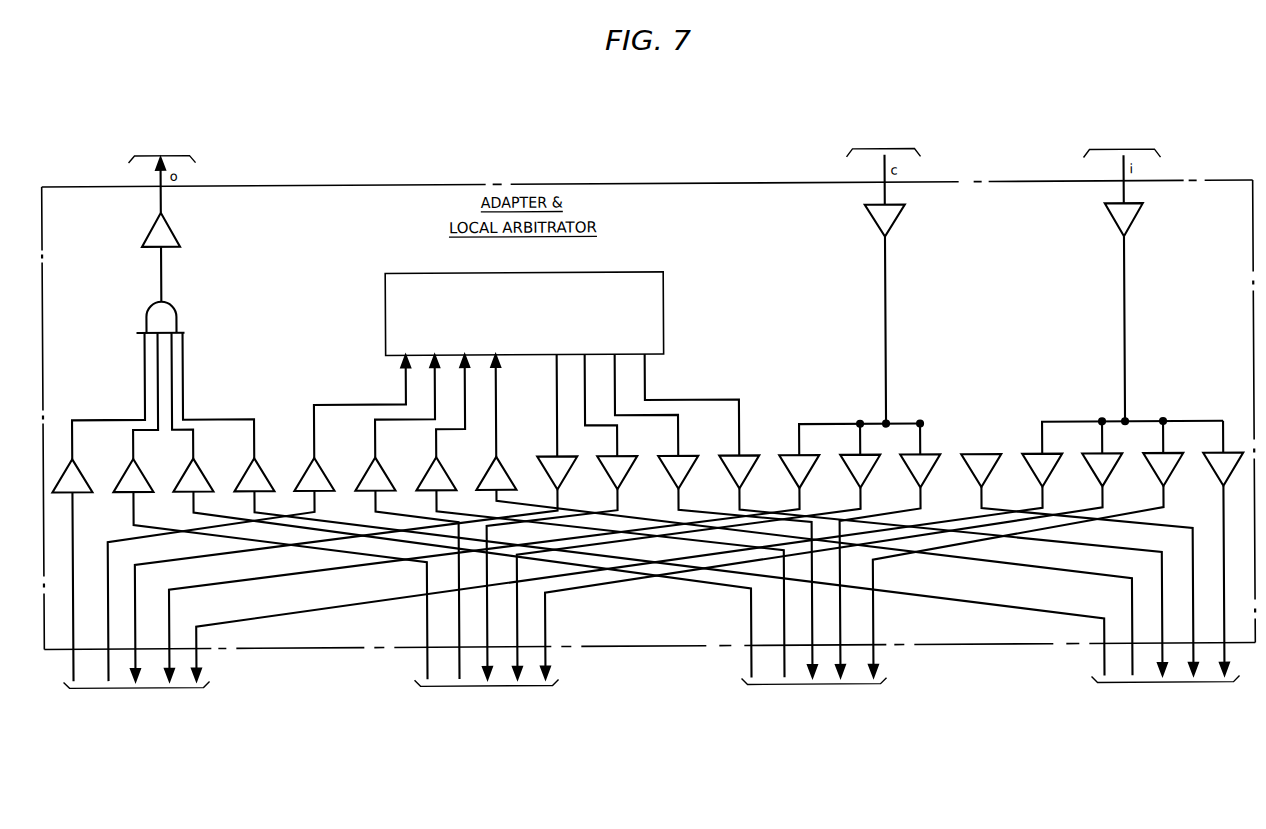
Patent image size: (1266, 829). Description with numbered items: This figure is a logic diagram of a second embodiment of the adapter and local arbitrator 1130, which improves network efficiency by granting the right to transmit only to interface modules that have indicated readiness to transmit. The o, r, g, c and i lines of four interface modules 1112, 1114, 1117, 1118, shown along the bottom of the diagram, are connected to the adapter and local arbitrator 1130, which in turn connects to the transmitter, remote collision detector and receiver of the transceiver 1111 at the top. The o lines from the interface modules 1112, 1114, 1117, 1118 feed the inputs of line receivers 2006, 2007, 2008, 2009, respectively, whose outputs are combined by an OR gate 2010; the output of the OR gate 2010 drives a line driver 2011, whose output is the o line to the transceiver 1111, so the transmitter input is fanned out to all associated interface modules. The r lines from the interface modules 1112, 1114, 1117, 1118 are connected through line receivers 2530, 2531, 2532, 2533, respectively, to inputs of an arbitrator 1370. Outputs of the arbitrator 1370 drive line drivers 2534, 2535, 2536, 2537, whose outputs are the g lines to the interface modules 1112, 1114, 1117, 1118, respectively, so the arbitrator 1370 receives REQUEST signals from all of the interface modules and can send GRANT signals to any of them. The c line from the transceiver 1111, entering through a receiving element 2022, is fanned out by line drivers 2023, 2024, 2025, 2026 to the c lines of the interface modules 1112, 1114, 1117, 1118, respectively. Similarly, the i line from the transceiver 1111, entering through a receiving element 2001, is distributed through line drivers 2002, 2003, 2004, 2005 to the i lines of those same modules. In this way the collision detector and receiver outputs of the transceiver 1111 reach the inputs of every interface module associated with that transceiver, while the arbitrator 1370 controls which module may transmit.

The adapter and local arbitrator 1130 is at (390, 183).
The arbitrator 1370 is at (428, 272).
The transceiver 1111 is at (641, 122).
The interface module 1112 is at (136, 692).
The interface module 1114 is at (486, 689).
The interface module 1117 is at (813, 686).
The interface module 1118 is at (1165, 684).
The line driver 2011 is at (178, 238).
The OR gate 2010 is at (177, 315).
The remote collision detector receiver 2022 is at (900, 212).
The receiver input buffer 2001 is at (1140, 214).
The line receiver 2006 is at (91, 478).
The line receiver 2007 is at (152, 478).
The line receiver 2008 is at (212, 478).
The line receiver 2009 is at (273, 478).
The line receiver 2530 is at (333, 478).
The line receiver 2531 is at (394, 478).
The line receiver 2532 is at (455, 478).
The line receiver 2533 is at (517, 475).
The line driver 2534 is at (567, 470).
The line driver 2535 is at (606, 458).
The line driver 2536 is at (666, 467).
The line driver 2537 is at (727, 467).
The line driver 2023 is at (788, 465).
The line driver 2024 is at (848, 467).
The line driver 2025 is at (909, 467).
The line driver 2026 is at (970, 467).
The line driver 2002 is at (1030, 467).
The line driver 2003 is at (1090, 467).
The line driver 2004 is at (1151, 467).
The line driver 2005 is at (1211, 467).